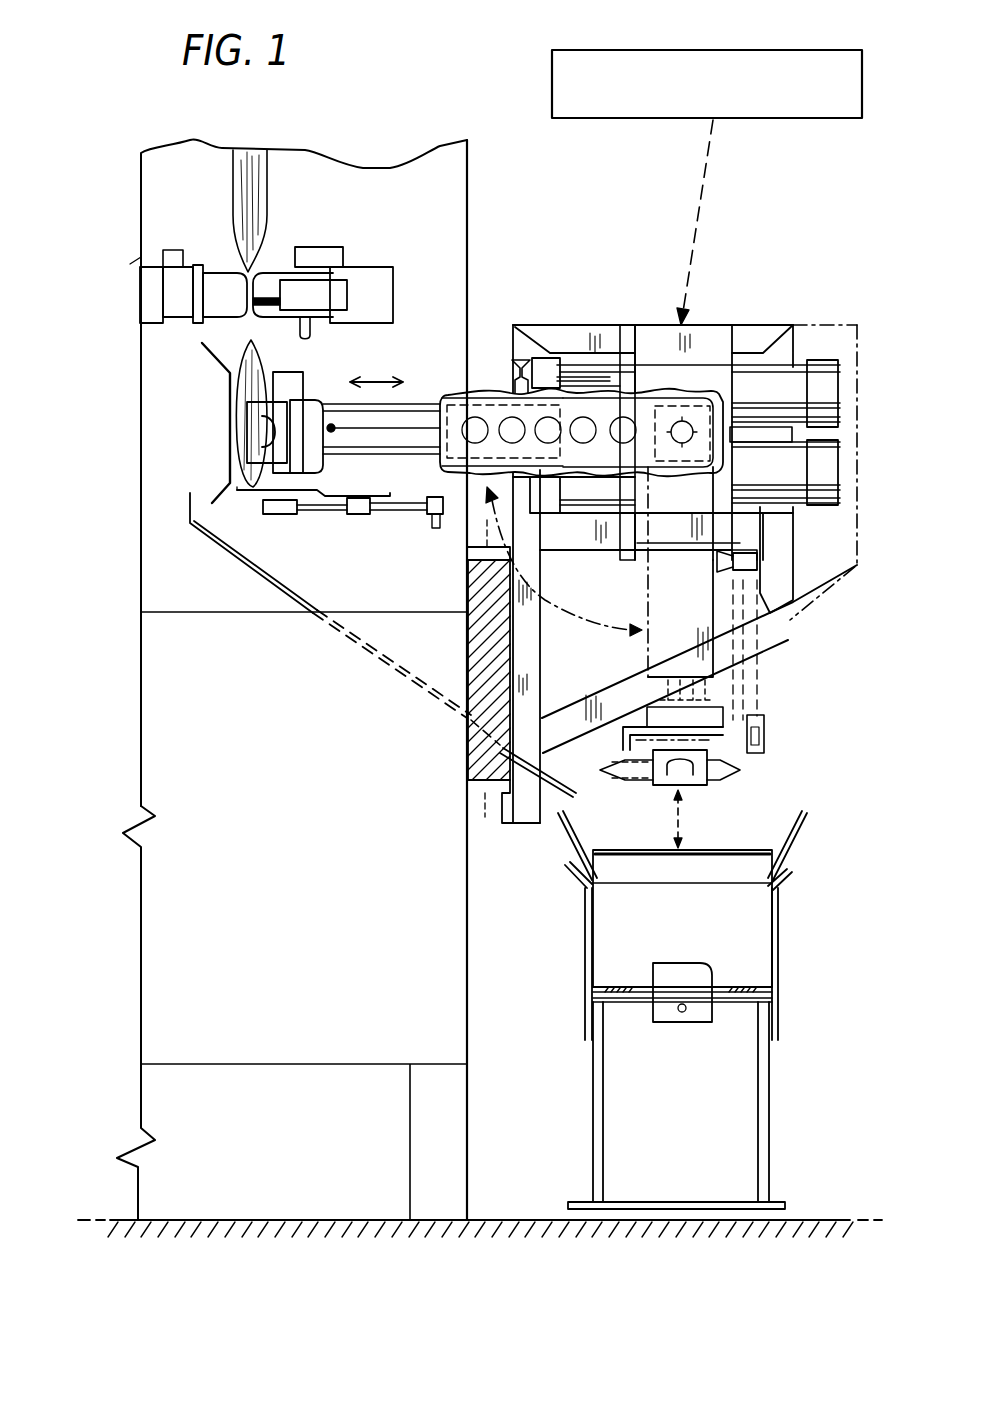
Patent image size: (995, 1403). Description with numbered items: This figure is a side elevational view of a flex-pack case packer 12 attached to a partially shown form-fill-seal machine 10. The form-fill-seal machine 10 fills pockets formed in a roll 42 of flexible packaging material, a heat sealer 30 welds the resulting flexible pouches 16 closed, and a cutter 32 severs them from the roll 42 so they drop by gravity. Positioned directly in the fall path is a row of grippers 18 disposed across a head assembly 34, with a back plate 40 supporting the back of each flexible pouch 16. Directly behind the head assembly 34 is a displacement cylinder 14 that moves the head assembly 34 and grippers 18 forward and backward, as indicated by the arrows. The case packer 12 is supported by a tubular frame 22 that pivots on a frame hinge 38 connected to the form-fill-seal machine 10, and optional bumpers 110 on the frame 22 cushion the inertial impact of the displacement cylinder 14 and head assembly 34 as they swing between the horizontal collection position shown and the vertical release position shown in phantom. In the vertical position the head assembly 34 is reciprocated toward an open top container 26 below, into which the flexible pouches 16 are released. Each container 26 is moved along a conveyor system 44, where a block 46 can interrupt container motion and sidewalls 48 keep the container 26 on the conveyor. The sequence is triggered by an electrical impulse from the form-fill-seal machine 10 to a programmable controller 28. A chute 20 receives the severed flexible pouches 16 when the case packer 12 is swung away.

The form-fill-seal machine 10 is at (376, 167).
The flex-pack case packer 12 is at (755, 322).
The displacement cylinder 14 is at (484, 393).
The flexible pouches 16 is at (240, 390).
The grippers 18 is at (240, 448).
The chute 20 is at (287, 583).
The tubular frame 22 is at (620, 325).
The open top container 26 is at (635, 916).
The programmable controller 28 is at (612, 118).
The heat sealer 30 is at (270, 275).
The cutter 32 is at (275, 310).
The head assembly 34 is at (253, 500).
The frame hinge 38 is at (467, 727).
The back plate 40 is at (232, 427).
The roll 42 is at (233, 183).
The conveyor system 44 is at (776, 975).
The block 46 is at (669, 1013).
The sidewalls 48 is at (585, 942).
The bumpers 110 is at (520, 365).